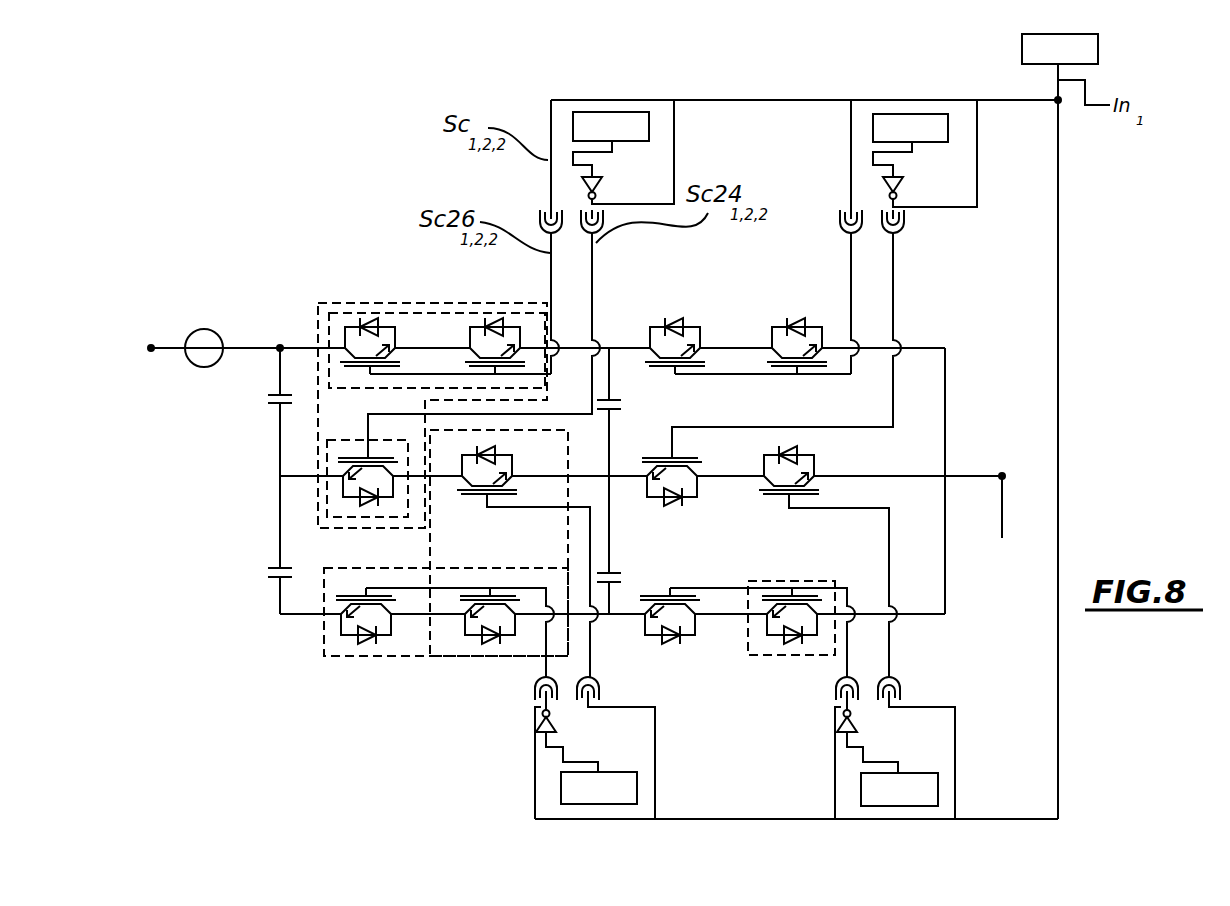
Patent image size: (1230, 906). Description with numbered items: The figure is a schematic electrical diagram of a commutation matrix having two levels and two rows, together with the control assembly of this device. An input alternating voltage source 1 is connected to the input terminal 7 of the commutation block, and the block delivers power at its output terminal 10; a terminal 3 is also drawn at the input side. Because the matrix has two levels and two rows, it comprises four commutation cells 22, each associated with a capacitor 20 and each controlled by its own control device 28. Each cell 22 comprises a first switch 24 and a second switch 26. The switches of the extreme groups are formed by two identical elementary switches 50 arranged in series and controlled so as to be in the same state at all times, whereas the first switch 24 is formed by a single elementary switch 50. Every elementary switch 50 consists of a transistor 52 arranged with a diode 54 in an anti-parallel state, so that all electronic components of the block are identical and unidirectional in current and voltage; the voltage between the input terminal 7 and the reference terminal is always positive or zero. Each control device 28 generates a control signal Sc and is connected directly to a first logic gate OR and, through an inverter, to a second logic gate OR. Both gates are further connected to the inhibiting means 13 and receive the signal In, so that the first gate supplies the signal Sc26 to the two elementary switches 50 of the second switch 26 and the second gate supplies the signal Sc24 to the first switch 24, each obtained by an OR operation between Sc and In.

The input alternating voltage source 1 is at (203, 329).
The input terminal 3 is at (151, 345).
The input terminal 7 is at (280, 346).
The output terminal 10 is at (1002, 474).
The inhibiting means 13 is at (1098, 50).
The capacitor 20 is at (622, 596).
The commutation cell 22 is at (420, 660).
The first switch 24 is at (328, 500).
The second switch 26 is at (430, 312).
The control device 28 is at (866, 797).
The elementary switch 50 is at (791, 623).
The transistor 52 is at (815, 618).
The diode 54 is at (790, 650).